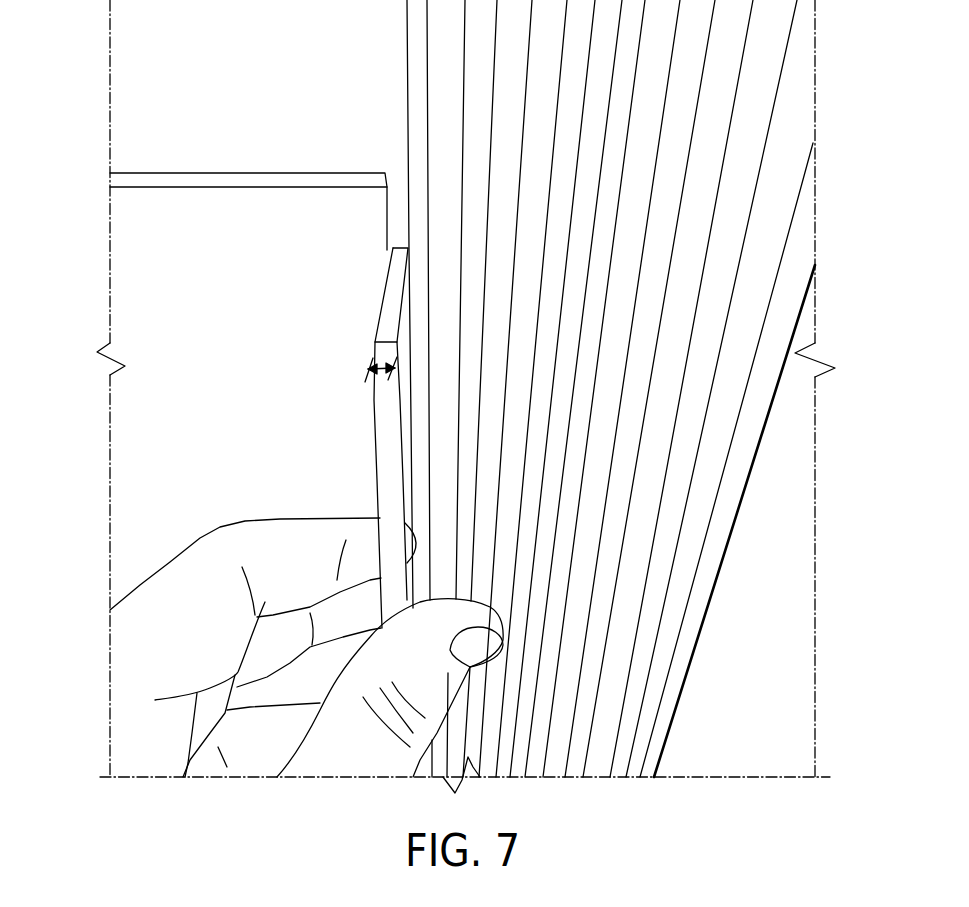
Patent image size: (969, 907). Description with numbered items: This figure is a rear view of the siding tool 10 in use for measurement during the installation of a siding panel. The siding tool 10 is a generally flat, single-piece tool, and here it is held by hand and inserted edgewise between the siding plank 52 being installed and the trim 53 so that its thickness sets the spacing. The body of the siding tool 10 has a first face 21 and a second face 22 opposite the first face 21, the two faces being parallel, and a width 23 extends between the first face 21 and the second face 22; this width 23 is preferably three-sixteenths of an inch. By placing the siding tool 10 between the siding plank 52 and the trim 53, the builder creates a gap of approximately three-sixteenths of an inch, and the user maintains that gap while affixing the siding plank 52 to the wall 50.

The siding tool 10 is at (315, 435).
The first face 21 is at (380, 305).
The second face 22 is at (410, 302).
The width 23 is at (375, 378).
The wall 50 is at (170, 50).
The siding plank 52 is at (173, 247).
The trim 53 is at (800, 227).